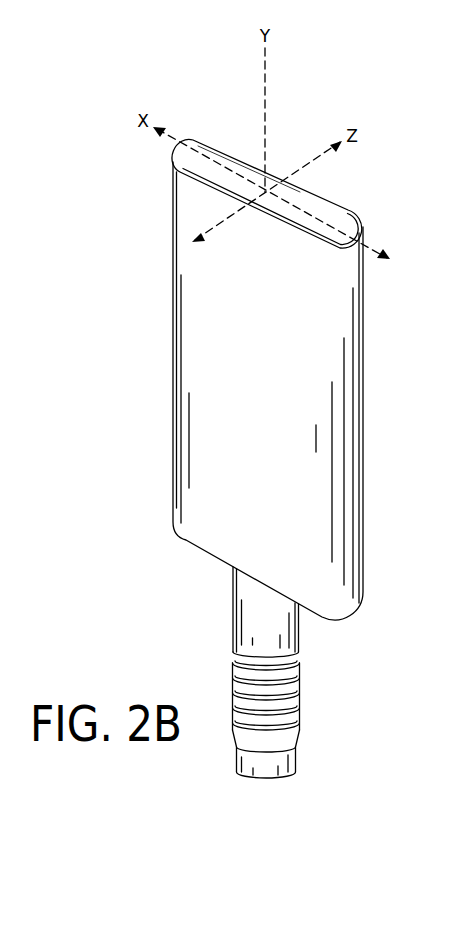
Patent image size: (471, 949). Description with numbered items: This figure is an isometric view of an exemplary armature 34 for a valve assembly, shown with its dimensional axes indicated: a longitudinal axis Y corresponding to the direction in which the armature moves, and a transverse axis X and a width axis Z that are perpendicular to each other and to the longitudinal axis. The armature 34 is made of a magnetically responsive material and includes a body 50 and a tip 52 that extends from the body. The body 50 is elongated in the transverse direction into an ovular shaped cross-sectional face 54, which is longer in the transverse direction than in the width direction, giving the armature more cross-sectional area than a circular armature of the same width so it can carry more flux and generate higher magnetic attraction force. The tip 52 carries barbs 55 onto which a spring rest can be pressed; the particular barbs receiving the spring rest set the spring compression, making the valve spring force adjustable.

The armature 34 is at (385, 353).
The body 50 is at (172, 282).
The tip 52 is at (232, 617).
The ovular shaped cross-sectional face 54 is at (350, 223).
The barbs 55 is at (300, 704).